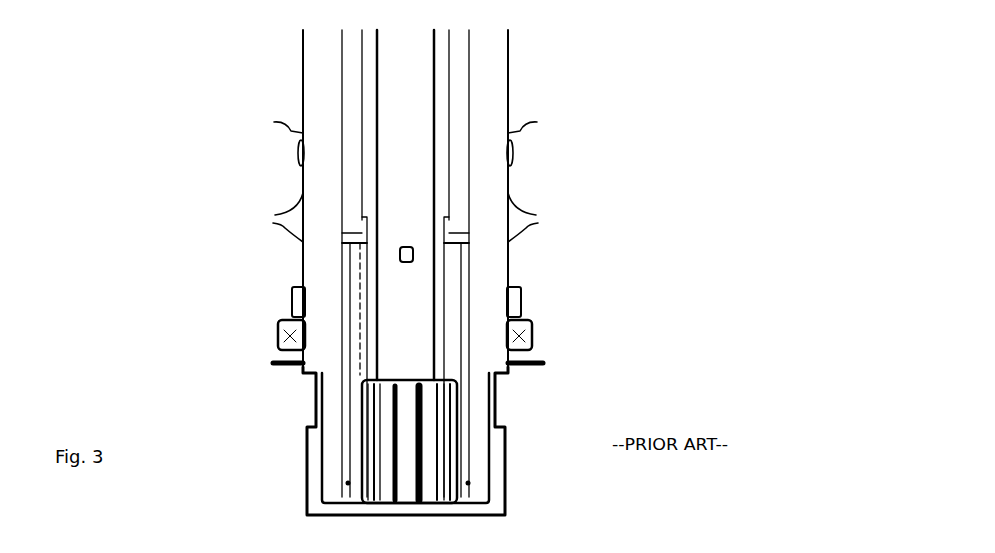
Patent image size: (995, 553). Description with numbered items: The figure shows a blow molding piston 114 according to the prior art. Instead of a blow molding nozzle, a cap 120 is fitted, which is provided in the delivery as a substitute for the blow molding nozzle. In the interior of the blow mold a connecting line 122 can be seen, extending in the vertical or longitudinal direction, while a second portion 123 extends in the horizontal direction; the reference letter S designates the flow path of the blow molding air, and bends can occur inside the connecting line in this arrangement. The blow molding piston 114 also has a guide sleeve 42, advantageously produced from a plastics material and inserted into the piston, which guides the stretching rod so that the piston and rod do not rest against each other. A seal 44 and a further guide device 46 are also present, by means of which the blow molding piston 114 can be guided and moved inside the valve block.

The blow molding piston 114 is at (248, 169).
The guide sleeve 42 is at (442, 127).
The second portion 123 is at (470, 228).
The further guide device 46 is at (520, 287).
The seal 44 is at (532, 322).
The connecting line 122 is at (455, 333).
The cap 120 is at (307, 495).
The flow path of the blow molding air S is at (356, 238).